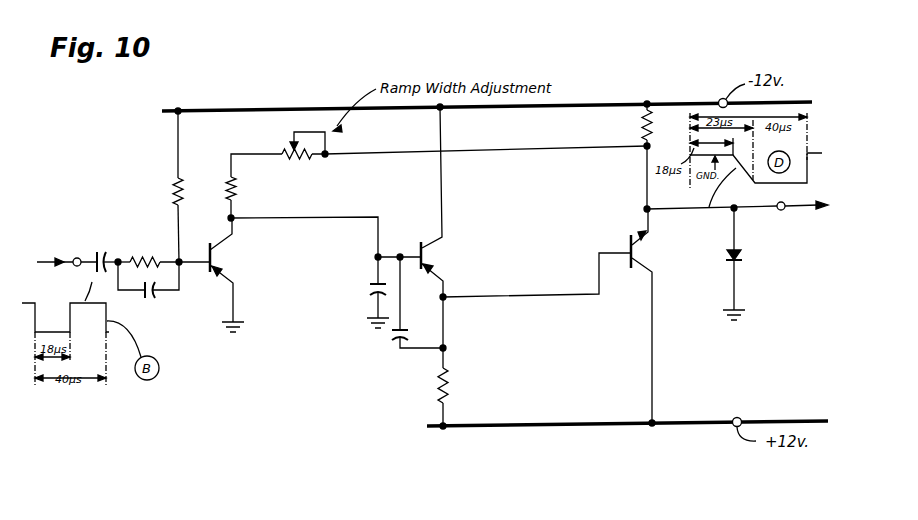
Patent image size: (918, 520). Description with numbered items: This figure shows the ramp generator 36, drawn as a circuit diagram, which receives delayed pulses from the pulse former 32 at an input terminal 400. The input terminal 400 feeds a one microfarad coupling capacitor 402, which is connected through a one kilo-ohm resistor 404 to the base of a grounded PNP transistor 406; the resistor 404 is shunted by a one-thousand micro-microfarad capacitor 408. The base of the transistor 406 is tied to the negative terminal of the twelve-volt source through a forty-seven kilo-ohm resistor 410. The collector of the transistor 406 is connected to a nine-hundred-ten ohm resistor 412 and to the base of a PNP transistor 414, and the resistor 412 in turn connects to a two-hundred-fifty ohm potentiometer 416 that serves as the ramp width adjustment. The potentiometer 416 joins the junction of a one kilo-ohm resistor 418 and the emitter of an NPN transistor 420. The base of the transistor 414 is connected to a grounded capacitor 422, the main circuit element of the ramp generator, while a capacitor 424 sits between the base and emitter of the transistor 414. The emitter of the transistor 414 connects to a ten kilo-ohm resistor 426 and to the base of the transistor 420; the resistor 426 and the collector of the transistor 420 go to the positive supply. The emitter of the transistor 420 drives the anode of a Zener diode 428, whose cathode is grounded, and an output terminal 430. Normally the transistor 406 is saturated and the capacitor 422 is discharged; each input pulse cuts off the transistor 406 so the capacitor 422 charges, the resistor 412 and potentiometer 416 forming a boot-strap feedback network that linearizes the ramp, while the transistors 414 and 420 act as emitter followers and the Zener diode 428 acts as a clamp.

The ramp generator 36 is at (270, 42).
The pulse former 32 is at (71, 185).
The input terminal 400 is at (40, 262).
The coupling capacitor 402 is at (100, 254).
The resistor 404 is at (154, 256).
The PNP transistor 406 is at (214, 270).
The capacitor 408 is at (147, 299).
The resistor 410 is at (183, 181).
The resistor 412 is at (236, 192).
The PNP transistor 414 is at (412, 247).
The potentiometer 416 is at (307, 162).
The resistor 418 is at (645, 127).
The NPN transistor 420 is at (629, 243).
The capacitor 422 is at (370, 282).
The capacitor 424 is at (392, 343).
The resistor 426 is at (449, 386).
The Zener diode 428 is at (742, 263).
The output terminal 430 is at (779, 211).